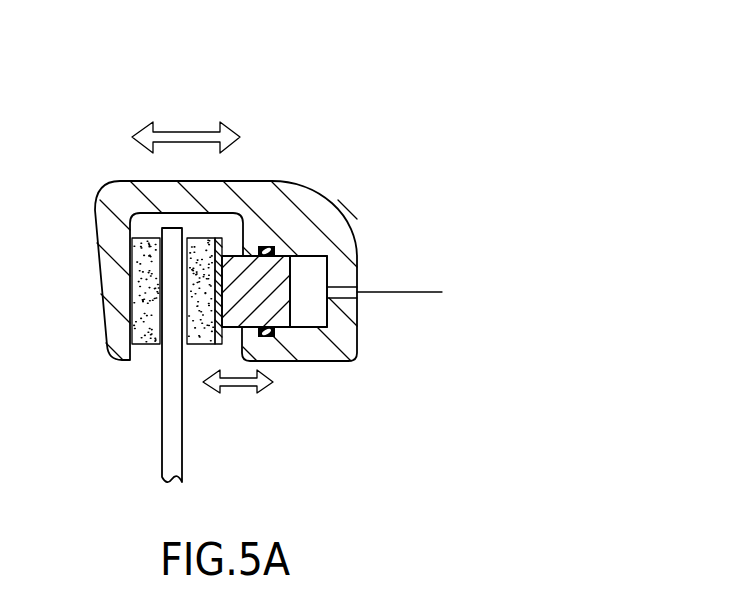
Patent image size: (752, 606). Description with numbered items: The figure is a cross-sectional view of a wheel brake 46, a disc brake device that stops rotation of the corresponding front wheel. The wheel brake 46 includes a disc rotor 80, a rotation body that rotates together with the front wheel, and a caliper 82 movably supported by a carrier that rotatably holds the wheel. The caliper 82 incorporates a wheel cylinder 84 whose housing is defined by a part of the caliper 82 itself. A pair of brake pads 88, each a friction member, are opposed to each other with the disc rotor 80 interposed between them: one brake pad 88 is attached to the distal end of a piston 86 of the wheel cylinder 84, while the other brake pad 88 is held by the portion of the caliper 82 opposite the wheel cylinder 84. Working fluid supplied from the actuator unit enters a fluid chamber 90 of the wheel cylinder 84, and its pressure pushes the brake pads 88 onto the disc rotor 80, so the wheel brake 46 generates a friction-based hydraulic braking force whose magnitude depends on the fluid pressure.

The wheel brake 46 is at (336, 62).
The disc rotor 80 is at (177, 459).
The caliper 82 is at (120, 190).
The wheel cylinder 84 is at (292, 224).
The piston 86 is at (243, 278).
The brake pads 88 is at (143, 337).
The fluid chamber 90 is at (312, 278).